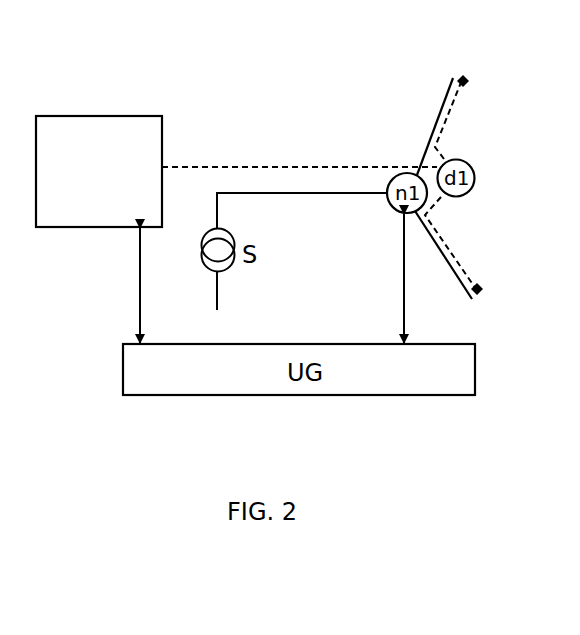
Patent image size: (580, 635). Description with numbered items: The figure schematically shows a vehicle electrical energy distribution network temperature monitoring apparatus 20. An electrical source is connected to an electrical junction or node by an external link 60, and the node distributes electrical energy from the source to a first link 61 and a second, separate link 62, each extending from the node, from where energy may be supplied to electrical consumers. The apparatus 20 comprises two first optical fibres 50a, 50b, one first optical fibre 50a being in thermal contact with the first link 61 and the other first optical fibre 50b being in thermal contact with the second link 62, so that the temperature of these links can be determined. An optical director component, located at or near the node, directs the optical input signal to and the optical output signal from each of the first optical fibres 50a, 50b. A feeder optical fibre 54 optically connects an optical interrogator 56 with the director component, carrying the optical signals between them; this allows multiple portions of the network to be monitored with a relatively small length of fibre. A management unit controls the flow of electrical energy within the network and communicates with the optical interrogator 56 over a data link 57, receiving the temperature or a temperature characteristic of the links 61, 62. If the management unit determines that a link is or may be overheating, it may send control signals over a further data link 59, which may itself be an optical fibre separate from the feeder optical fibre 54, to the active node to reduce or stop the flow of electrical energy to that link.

The temperature monitoring apparatus 20 is at (208, 62).
The optical interrogator 56 is at (99, 171).
The feeder optical fibre 54 is at (299, 152).
The external link 60 is at (302, 251).
The first link 61 is at (426, 126).
The second link 62 is at (443, 255).
The first optical fibre 50a is at (463, 117).
The first optical fibre 50b is at (459, 246).
The data link 57 is at (119, 285).
The data link 59 is at (385, 278).